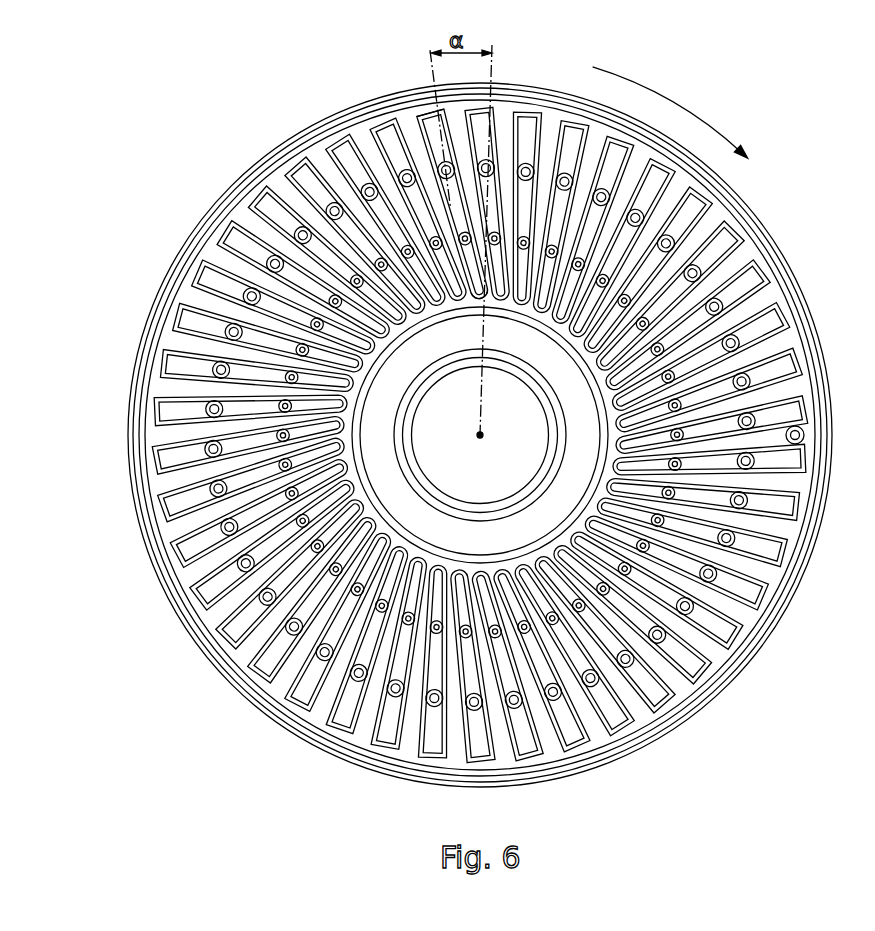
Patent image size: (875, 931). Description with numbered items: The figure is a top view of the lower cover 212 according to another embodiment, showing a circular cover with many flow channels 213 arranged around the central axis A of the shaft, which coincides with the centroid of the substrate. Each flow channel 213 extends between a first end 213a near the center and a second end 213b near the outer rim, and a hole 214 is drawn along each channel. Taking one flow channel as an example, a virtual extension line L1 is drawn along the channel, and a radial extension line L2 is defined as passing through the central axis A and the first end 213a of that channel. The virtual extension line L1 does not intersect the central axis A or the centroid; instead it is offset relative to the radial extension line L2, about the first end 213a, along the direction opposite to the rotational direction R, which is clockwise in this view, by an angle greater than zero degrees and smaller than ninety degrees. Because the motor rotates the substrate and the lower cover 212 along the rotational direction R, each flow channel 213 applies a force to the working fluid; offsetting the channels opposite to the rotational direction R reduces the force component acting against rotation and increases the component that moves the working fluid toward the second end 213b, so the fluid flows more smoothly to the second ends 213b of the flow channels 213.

The lower cover 212 is at (158, 295).
The flow channels 213 is at (455, 195).
The first end 213a is at (480, 302).
The second end 213b is at (439, 106).
The hole 214 is at (436, 160).
The central axis A is at (478, 437).
The virtual extension line L1 is at (430, 56).
The radial extension line L2 is at (492, 48).
The rotational direction R is at (682, 128).